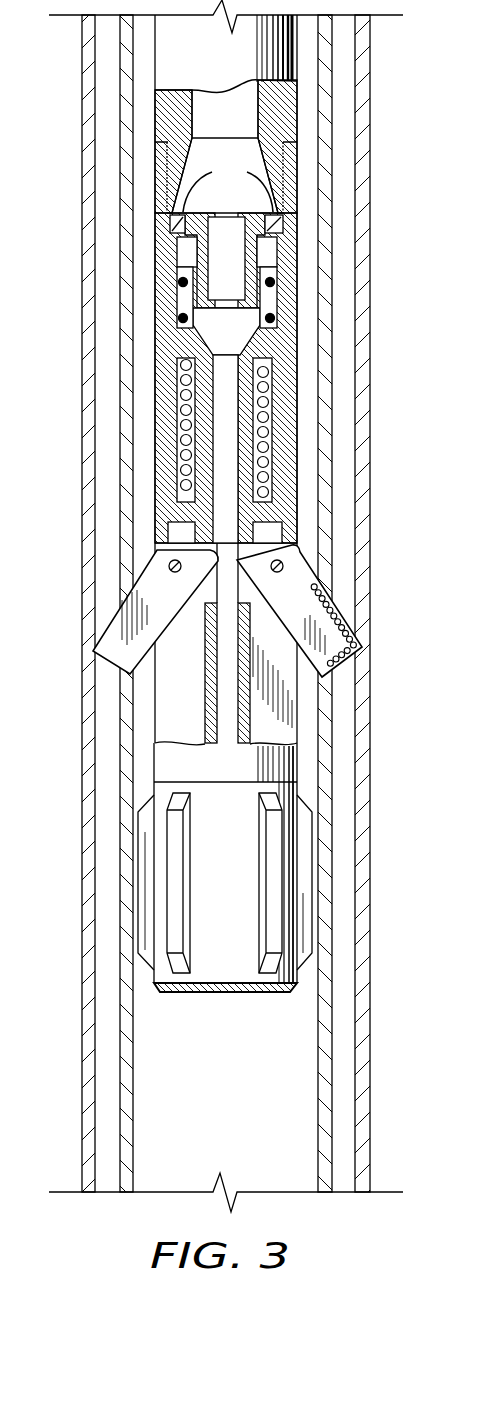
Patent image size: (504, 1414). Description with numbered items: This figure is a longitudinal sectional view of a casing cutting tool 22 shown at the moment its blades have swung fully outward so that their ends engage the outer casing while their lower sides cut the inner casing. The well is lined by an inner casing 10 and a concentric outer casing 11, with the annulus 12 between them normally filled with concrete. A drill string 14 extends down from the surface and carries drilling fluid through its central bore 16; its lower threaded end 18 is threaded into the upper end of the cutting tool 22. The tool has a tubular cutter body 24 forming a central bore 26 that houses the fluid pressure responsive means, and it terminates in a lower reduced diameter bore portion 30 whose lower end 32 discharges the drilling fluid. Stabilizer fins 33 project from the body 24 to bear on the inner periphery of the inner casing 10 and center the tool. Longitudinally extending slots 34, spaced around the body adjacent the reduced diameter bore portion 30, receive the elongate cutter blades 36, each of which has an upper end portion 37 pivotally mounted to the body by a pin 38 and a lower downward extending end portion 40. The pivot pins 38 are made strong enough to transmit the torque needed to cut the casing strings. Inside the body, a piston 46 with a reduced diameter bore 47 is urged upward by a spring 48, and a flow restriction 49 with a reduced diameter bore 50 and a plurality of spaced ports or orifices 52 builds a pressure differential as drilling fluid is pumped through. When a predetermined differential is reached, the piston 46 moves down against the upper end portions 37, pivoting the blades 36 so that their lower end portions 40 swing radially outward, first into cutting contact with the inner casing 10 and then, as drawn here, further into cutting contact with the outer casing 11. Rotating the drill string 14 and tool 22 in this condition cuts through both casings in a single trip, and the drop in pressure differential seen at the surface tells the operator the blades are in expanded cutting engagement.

The inner casing 10 is at (327, 267).
The outer casing 11 is at (366, 291).
The annulus 12 is at (347, 316).
The drill string 14 is at (228, 52).
The central bore 16 is at (280, 106).
The lower threaded end 18 is at (275, 175).
The cutting tool 22 is at (300, 377).
The tubular cutter body 24 is at (290, 412).
The central bore 26 is at (271, 440).
The lower reduced diameter bore portion 30 is at (223, 745).
The lower end 32 is at (218, 995).
The stabilizer fins 33 is at (303, 952).
The longitudinally extending slots 34 is at (270, 722).
The elongate cutter blades 36 is at (300, 611).
The upper end portion 37 is at (257, 543).
The pin 38 is at (283, 567).
The lower end portion 40 is at (340, 641).
The piston 46 is at (271, 345).
The reduced diameter bore 47 is at (230, 483).
The spring 48 is at (272, 458).
The flow restriction 49 is at (280, 230).
The reduced diameter bore 50 is at (233, 252).
The ports or orifices 52 is at (228, 180).